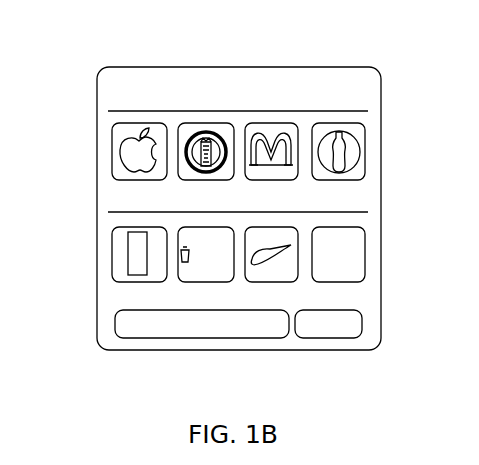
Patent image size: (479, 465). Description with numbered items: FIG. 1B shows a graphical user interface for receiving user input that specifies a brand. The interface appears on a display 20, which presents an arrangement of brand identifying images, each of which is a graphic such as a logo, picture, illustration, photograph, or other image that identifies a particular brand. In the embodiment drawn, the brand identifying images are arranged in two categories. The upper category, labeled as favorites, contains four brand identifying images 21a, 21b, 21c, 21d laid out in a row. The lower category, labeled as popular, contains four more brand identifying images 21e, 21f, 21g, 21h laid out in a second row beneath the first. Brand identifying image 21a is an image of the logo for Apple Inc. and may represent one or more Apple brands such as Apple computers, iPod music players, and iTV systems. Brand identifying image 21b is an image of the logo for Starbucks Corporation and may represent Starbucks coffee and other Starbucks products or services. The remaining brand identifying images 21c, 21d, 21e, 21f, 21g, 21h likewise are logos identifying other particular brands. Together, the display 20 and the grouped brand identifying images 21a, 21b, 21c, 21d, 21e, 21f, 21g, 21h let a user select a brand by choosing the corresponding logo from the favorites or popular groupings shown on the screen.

The display 20 is at (364, 85).
The brand identifying image 21a is at (118, 132).
The brand identifying image 21b is at (225, 128).
The brand identifying image 21c is at (253, 125).
The brand identifying image 21d is at (365, 132).
The brand identifying image 21e is at (118, 252).
The brand identifying image 21f is at (227, 272).
The brand identifying image 21g is at (276, 272).
The brand identifying image 21h is at (365, 237).